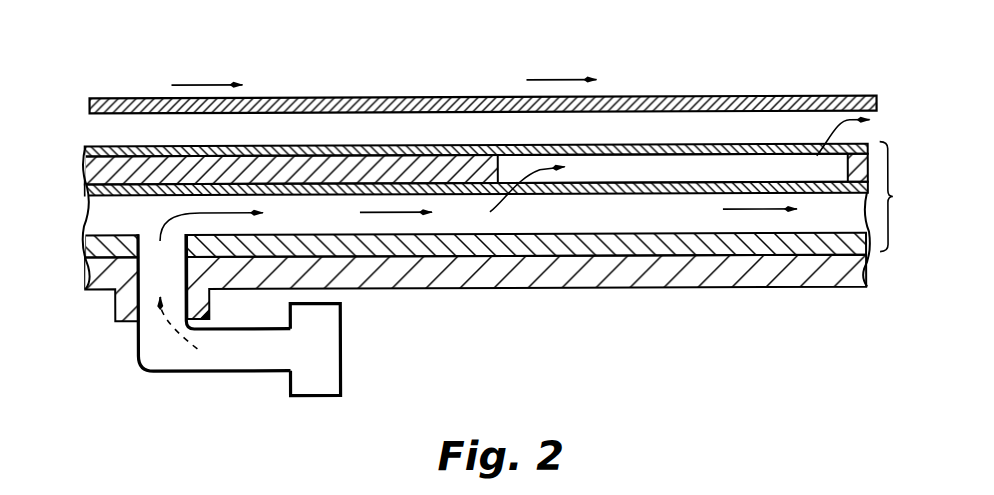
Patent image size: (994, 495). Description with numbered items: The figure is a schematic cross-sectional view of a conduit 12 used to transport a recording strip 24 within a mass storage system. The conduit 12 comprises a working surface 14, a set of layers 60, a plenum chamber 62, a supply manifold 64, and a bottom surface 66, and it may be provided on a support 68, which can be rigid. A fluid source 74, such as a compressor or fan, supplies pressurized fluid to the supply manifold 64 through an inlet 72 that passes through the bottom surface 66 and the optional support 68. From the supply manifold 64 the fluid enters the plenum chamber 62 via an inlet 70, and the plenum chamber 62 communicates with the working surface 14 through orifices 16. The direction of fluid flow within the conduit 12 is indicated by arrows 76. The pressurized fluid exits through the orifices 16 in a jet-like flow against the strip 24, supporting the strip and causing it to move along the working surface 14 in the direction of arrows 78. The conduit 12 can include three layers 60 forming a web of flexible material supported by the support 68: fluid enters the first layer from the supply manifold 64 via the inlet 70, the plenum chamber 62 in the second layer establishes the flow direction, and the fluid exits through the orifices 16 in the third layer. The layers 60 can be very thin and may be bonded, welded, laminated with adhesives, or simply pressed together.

The conduit 12 is at (904, 196).
The working surface 14 is at (401, 146).
The orifices 16 is at (806, 146).
The strip 24 is at (724, 96).
The layers 60 is at (297, 190).
The plenum chamber 62 is at (621, 146).
The supply manifold 64 is at (100, 213).
The bottom surface 66 is at (575, 250).
The support 68 is at (690, 277).
The inlet 70 is at (537, 188).
The inlet 72 is at (103, 277).
The fluid source 74 is at (325, 375).
The arrows 76 is at (380, 214).
The arrows 78 is at (548, 80).